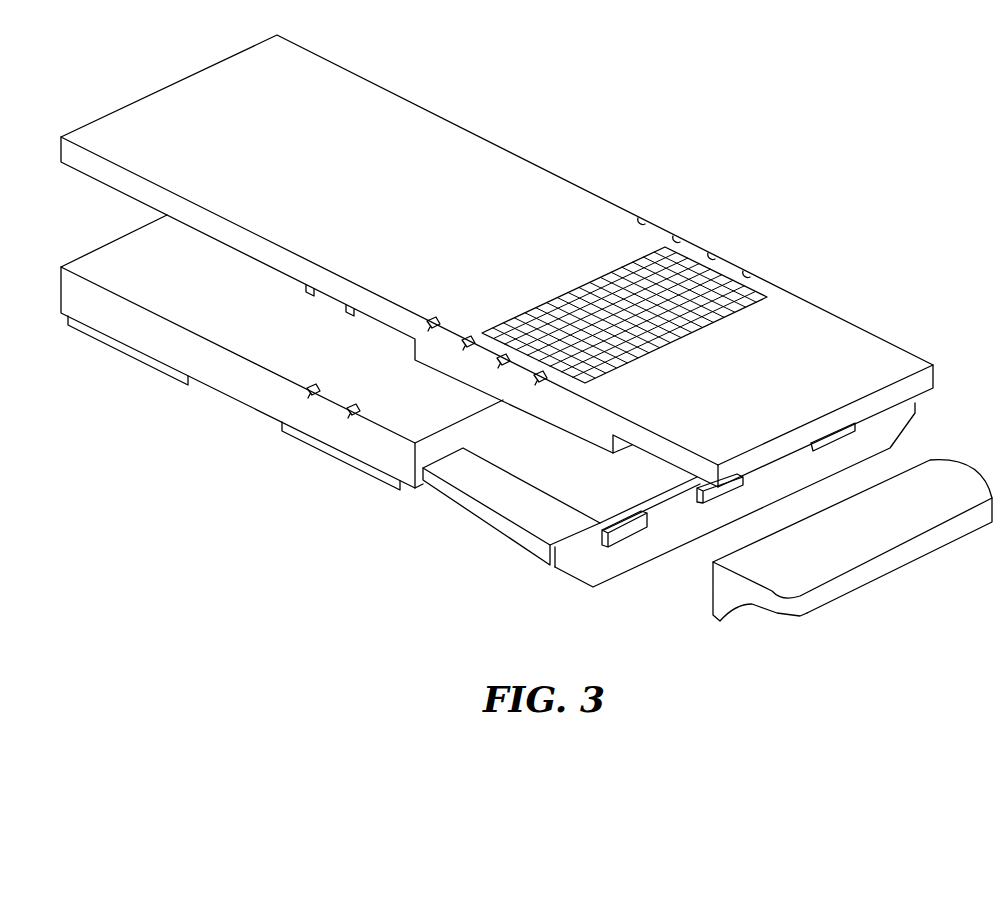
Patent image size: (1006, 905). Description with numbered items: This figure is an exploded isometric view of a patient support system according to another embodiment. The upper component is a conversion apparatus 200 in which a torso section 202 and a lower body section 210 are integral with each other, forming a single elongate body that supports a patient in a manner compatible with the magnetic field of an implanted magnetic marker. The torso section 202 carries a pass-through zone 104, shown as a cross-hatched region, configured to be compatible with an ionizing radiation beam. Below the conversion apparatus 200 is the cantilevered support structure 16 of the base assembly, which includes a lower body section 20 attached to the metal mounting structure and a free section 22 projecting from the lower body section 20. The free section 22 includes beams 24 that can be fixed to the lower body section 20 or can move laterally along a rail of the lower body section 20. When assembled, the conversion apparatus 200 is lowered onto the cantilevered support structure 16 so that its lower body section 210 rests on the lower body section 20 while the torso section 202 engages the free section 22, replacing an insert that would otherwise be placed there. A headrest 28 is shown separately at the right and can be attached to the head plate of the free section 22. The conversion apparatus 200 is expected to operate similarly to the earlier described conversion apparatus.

The conversion apparatus 200 is at (587, 173).
The lower body section 210 is at (402, 113).
The torso section 202 is at (803, 317).
The pass-through zone 104 is at (680, 263).
The lower body section 20 is at (255, 393).
The cantilevered support structure 16 is at (409, 464).
The free section 22 is at (669, 500).
The beams 24 is at (508, 498).
The headrest 28 is at (915, 528).